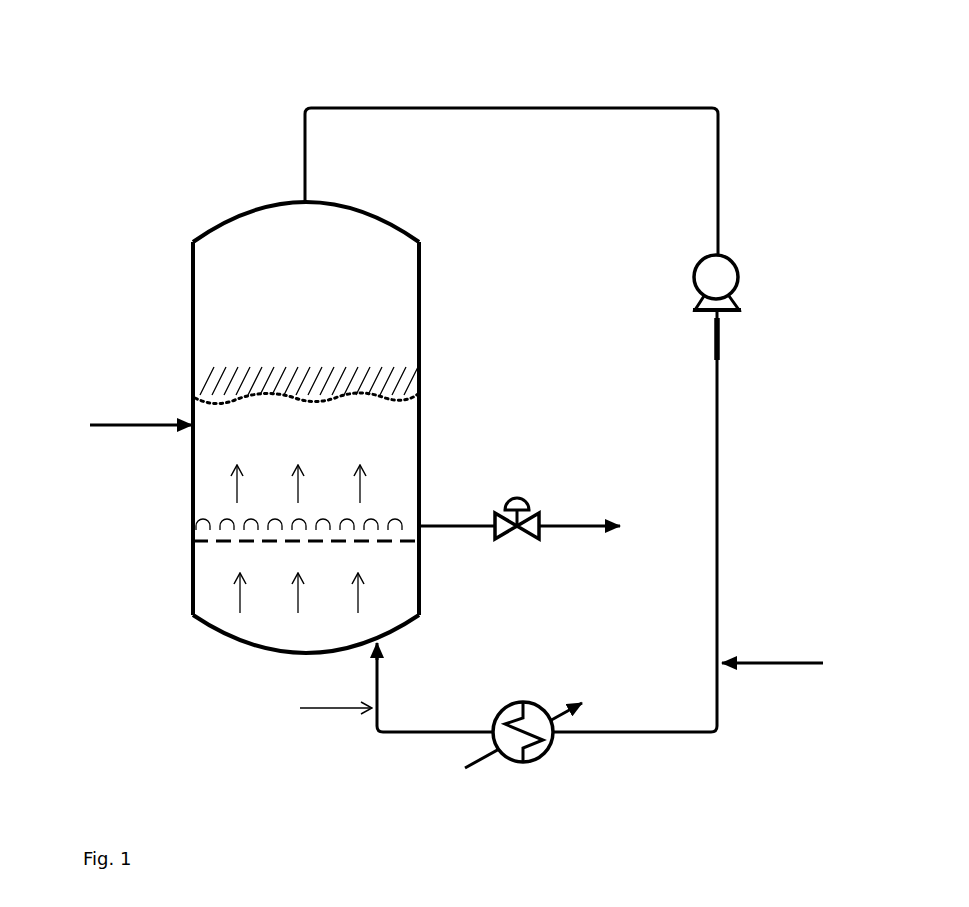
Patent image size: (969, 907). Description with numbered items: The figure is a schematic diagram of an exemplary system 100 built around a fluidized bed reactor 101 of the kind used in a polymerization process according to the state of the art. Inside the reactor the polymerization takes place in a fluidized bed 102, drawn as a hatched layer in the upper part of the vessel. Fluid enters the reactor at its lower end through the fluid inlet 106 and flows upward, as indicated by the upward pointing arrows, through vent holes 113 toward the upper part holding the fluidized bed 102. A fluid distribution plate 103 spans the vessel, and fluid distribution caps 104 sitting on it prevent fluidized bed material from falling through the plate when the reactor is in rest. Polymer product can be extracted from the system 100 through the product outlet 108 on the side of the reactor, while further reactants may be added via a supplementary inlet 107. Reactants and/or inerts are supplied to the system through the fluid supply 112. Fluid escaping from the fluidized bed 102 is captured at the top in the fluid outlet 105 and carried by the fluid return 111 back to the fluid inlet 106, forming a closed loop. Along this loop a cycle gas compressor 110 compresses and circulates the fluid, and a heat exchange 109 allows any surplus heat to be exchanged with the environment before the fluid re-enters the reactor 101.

The system 100 is at (232, 108).
The fluidized bed reactor 101 is at (190, 259).
The fluidized bed 102 is at (200, 383).
The fluid distribution plate 103 is at (216, 541).
The fluid distribution caps 104 is at (228, 515).
The fluid outlet 105 is at (300, 143).
The fluid inlet 106 is at (311, 708).
The supplementary inlet 107 is at (140, 431).
The product outlet 108 is at (465, 521).
The heat exchange 109 is at (527, 780).
The cycle gas compressor 110 is at (742, 253).
The fluid return 111 is at (722, 397).
The fluid supply 112 is at (773, 667).
The vent holes 113 is at (270, 546).